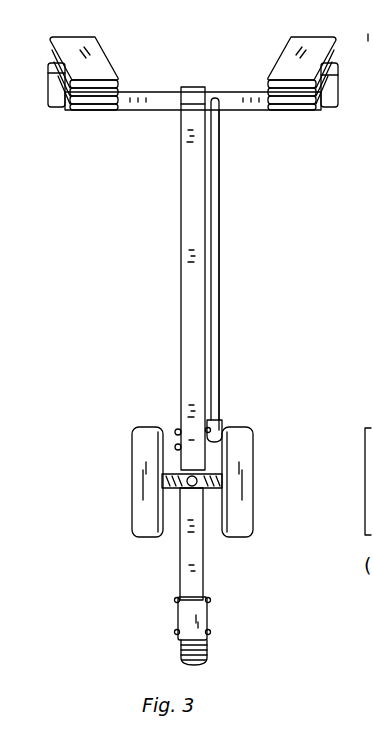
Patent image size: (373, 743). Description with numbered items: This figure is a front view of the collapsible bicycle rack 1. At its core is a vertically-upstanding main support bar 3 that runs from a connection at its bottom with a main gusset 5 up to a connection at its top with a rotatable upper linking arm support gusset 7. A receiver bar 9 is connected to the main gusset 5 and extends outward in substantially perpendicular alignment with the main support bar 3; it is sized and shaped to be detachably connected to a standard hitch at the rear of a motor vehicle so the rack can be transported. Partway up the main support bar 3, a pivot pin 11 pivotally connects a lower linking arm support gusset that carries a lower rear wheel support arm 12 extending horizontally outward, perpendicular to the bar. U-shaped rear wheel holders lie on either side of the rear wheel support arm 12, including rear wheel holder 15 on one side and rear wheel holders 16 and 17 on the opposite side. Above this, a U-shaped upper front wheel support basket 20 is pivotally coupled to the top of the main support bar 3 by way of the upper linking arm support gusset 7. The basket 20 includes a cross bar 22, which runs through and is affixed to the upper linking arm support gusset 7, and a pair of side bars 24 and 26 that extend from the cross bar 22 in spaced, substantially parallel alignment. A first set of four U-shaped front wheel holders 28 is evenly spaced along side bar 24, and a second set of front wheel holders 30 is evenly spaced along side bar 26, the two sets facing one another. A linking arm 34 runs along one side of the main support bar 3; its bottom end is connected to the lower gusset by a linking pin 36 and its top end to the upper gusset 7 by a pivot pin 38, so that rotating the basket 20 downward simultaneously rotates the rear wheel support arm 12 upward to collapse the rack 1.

The collapsible bicycle rack 1 is at (272, 262).
The main support bar 3 is at (190, 238).
The main gusset 5 is at (188, 618).
The upper linking arm support gusset 7 is at (214, 145).
The receiver bar 9 is at (181, 654).
The pivot pin 11 is at (178, 448).
The lower rear wheel support arm 12 is at (203, 478).
The U-shaped rear wheel holder 15 is at (237, 515).
The U-shaped rear wheel holder 16 is at (366, 587).
The U-shaped rear wheel holder 17 is at (142, 513).
The upper front wheel support basket 20 is at (234, 84).
The cross bar 22 is at (155, 91).
The side bar 24 is at (48, 84).
The side bar 26 is at (338, 86).
The first set of U-shaped front wheel holders 28 is at (290, 60).
The second set of U-shaped front wheel holders 30 is at (98, 60).
The linking arm 34 is at (221, 314).
The linking pin 36 is at (180, 427).
The pivot pin 38 is at (189, 103).